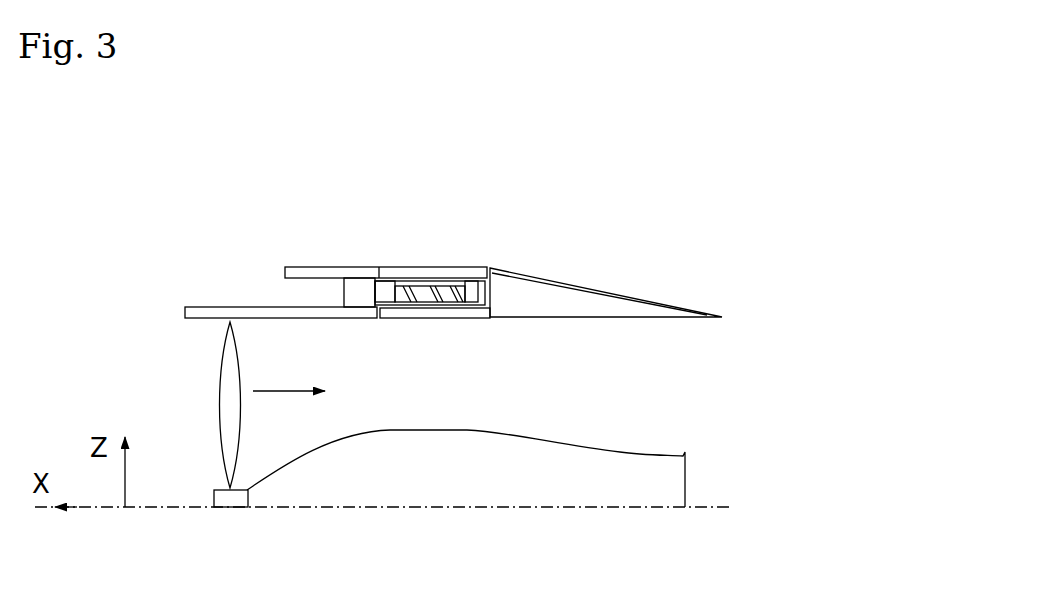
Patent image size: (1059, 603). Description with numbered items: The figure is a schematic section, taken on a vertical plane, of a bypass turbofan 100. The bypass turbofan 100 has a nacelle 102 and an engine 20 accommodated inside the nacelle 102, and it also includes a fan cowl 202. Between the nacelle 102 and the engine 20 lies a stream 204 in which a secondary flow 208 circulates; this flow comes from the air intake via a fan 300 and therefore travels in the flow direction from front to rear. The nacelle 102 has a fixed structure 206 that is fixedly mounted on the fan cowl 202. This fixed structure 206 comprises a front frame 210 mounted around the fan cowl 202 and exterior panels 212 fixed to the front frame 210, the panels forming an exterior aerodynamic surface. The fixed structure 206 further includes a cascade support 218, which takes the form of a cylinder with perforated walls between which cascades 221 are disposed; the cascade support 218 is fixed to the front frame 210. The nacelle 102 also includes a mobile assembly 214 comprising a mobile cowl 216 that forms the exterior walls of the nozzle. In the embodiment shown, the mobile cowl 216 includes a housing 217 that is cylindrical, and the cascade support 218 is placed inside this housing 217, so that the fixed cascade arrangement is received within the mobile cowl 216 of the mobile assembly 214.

The bypass turbofan 100 is at (695, 198).
The nacelle 102 is at (555, 210).
The fan cowl 202 is at (198, 308).
The stream 204 is at (307, 363).
The fixed structure 206 is at (230, 203).
The secondary flow 208 is at (288, 412).
The front frame 210 is at (357, 289).
The exterior panels 212 is at (345, 268).
The mobile assembly 214 is at (702, 277).
The mobile cowl 216 is at (607, 305).
The housing 217 is at (484, 278).
The cascade support 218 is at (392, 290).
The cascades 221 is at (428, 290).
The fan 300 is at (230, 403).
The engine 20 is at (678, 458).